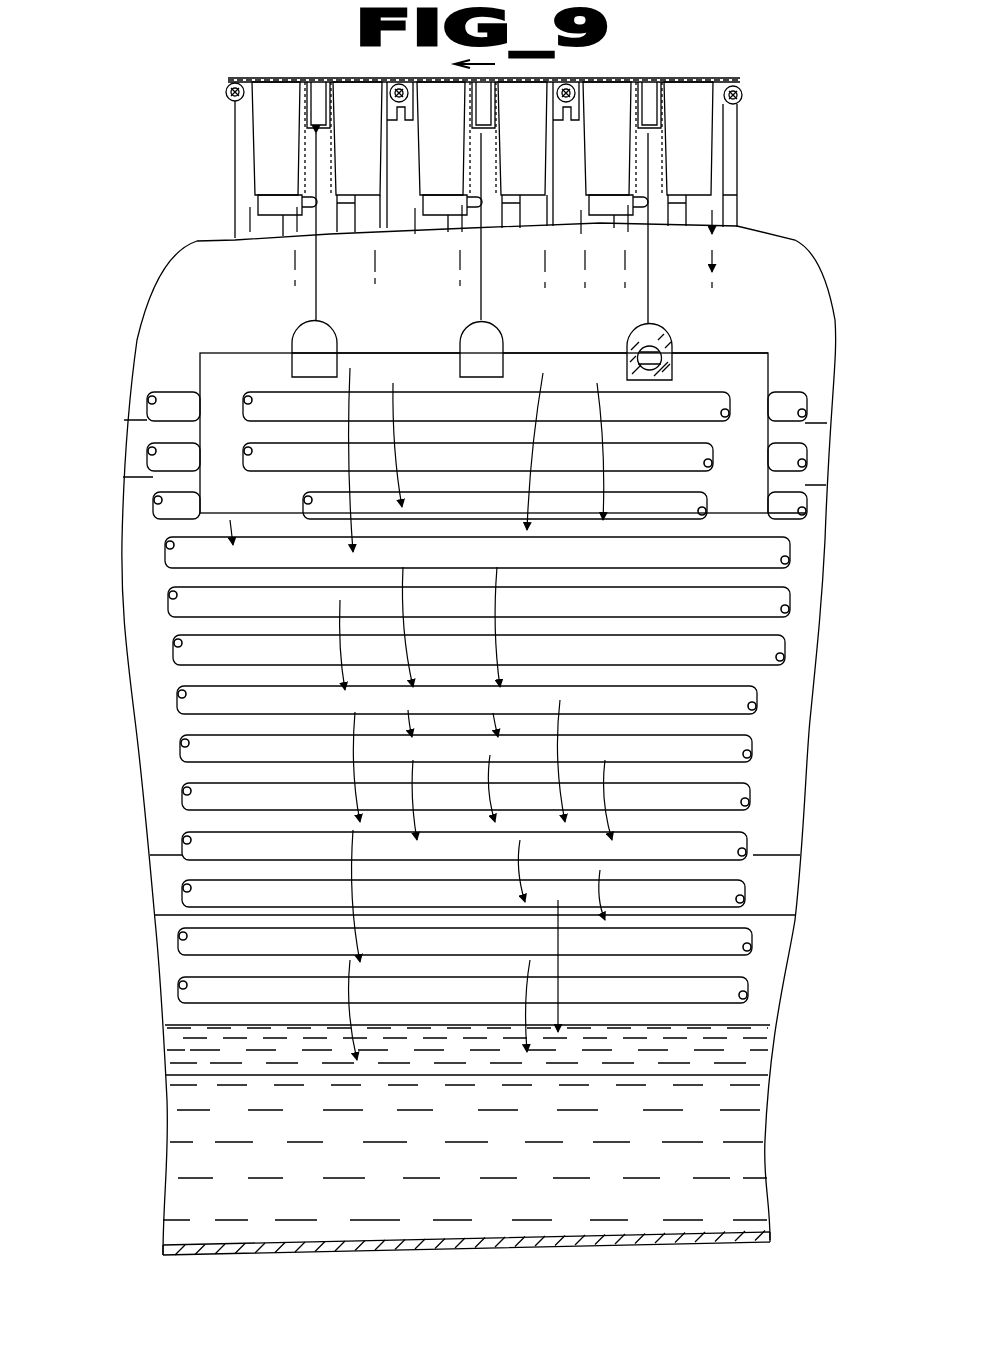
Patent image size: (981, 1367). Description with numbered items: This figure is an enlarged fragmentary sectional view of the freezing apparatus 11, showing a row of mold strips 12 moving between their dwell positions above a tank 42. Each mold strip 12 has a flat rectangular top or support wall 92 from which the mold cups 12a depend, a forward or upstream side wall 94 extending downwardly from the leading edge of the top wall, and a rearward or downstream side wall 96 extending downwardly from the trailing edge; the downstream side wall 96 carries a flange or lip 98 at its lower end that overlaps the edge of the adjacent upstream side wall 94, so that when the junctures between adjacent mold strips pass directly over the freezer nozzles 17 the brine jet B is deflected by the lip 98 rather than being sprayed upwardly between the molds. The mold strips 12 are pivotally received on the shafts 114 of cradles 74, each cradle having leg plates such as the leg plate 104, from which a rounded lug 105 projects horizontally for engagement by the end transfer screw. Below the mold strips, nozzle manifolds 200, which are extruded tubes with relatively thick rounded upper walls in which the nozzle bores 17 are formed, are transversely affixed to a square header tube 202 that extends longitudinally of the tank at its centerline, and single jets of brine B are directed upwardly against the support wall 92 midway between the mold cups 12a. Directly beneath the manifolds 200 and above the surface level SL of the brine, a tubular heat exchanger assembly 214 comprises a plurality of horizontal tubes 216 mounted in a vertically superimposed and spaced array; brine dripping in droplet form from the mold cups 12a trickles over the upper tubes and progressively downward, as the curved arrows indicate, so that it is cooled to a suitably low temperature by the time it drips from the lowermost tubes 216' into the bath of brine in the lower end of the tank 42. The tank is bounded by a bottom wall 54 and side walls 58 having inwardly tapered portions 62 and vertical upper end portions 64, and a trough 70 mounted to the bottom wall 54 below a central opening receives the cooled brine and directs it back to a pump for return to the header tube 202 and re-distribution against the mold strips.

The freezing apparatus 11 is at (775, 368).
The mold strip 12 is at (328, 72).
The mold cups 12a is at (262, 140).
The freezer nozzle 17 is at (660, 330).
The tank 42 is at (812, 836).
The bottom wall 54 is at (762, 1062).
The side wall 58 is at (808, 678).
The inwardly tapered portions 62 is at (822, 458).
The vertical upper end portions 64 is at (828, 388).
The trough 70 is at (775, 1236).
The cradle 74 is at (232, 165).
The support wall 92 is at (262, 78).
The upstream side wall 94 is at (318, 108).
The downstream side wall 96 is at (312, 108).
The flange 98 is at (320, 130).
The leg plate 104 is at (234, 193).
The rounded lug 105 is at (589, 207).
The shaft 114 is at (226, 90).
The nozzle manifold 200 is at (462, 334).
The header tube 202 is at (216, 356).
The tubular heat exchanger assembly 214 is at (756, 800).
The horizontal tubes 216 is at (192, 692).
The lowermost tubes 216' is at (793, 994).
The brine B is at (316, 296).
The surface level SL is at (165, 1017).